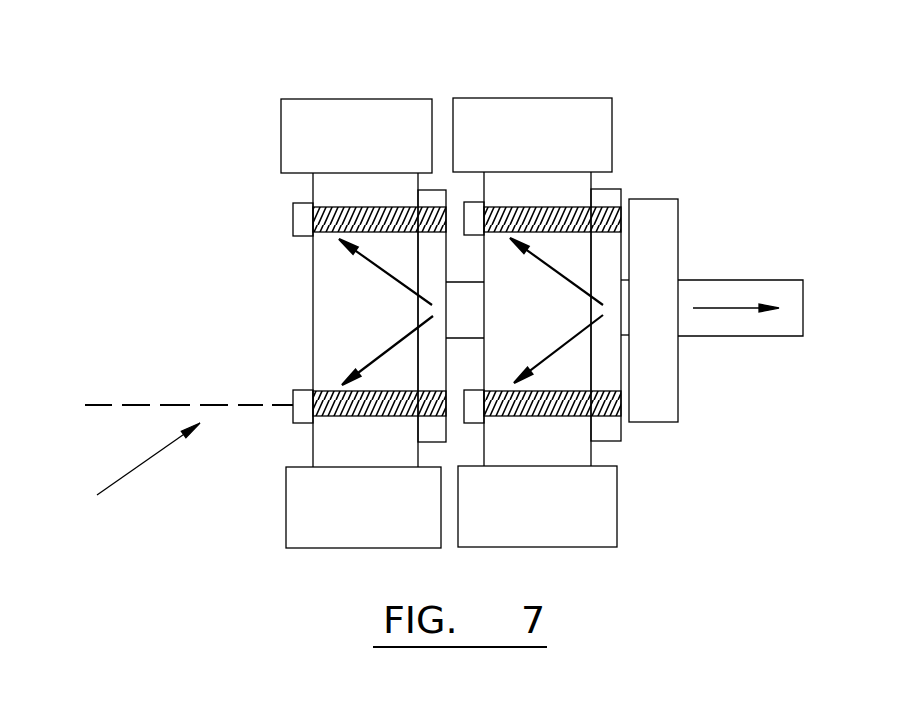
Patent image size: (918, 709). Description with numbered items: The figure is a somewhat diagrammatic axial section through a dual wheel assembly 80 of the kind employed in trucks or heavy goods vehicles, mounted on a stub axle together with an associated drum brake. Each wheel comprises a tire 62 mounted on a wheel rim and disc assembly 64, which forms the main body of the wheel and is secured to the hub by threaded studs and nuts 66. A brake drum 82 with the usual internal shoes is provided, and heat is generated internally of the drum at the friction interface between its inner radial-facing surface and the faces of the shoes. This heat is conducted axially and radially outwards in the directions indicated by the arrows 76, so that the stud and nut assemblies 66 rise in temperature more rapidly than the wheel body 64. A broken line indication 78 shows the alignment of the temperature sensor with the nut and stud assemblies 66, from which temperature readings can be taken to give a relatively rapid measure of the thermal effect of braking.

The tire 62 is at (402, 98).
The wheel rim and disc assembly 64 is at (312, 261).
The threaded studs and nuts 66 is at (292, 215).
The arrows 76 is at (388, 278).
The broken line indication 78 is at (140, 405).
The dual wheel assembly 80 is at (130, 476).
The brake drum 82 is at (678, 208).